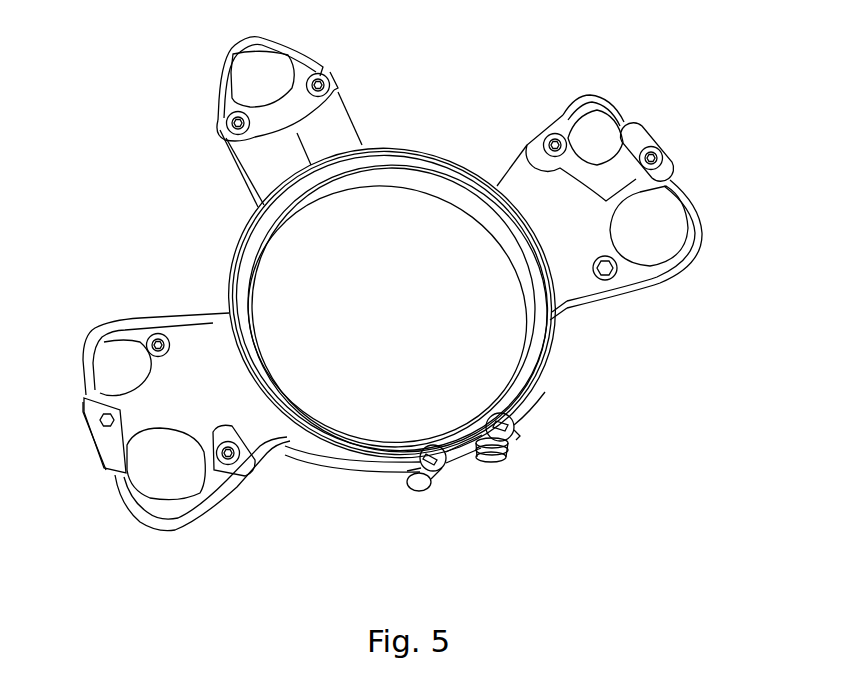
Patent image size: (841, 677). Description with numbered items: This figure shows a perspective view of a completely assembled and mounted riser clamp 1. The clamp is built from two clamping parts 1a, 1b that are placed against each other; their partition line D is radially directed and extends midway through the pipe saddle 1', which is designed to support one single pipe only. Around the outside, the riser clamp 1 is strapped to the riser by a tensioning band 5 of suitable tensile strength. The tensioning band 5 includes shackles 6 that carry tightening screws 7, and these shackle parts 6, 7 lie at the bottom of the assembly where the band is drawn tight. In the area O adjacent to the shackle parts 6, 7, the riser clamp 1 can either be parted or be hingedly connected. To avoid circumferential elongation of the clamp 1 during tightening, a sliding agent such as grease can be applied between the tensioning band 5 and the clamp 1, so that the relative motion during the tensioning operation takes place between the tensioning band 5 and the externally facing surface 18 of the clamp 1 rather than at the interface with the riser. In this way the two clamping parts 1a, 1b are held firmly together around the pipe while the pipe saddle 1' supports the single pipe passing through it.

The riser clamp 1 is at (202, 114).
The clamping part 1a is at (182, 316).
The clamping part 1b is at (645, 287).
The pipe saddle 1' is at (392, 302).
The partition line D is at (297, 133).
The area O is at (448, 407).
The tensioning band 5 is at (306, 458).
The shackle 6 is at (520, 438).
The tightening screw 7 is at (480, 460).
The externally facing surface 18 is at (385, 470).